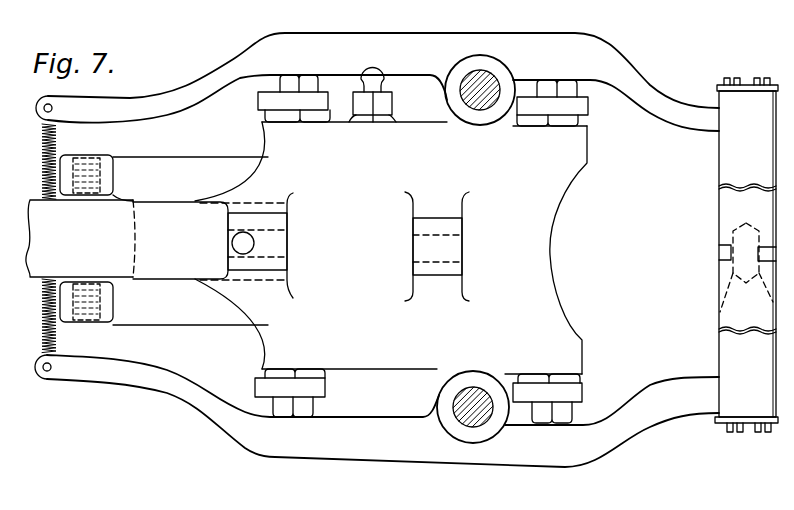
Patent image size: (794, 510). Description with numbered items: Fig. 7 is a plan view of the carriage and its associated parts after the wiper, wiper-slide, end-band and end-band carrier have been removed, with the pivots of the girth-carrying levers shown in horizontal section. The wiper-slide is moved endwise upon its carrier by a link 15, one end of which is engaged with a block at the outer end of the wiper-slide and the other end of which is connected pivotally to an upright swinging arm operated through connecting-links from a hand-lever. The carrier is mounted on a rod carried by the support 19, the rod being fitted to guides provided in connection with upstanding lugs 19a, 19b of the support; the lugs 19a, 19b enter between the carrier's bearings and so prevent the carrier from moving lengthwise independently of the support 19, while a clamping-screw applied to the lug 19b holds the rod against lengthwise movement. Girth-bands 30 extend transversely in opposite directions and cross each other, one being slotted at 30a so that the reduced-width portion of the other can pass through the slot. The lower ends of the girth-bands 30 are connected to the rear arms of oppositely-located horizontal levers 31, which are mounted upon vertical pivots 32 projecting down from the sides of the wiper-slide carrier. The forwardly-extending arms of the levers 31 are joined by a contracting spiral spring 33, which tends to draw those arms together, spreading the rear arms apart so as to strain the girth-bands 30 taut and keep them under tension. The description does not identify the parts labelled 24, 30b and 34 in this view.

The link 15 is at (187, 167).
The support 19 is at (543, 211).
The upstanding lug 19a is at (430, 217).
The upstanding lug 19b is at (263, 213).
The knob stud 24 is at (362, 68).
The girth-band 30 is at (720, 156).
The slot 30a is at (737, 277).
The slot 30b is at (740, 257).
The horizontal lever 31 is at (400, 40).
The vertical pivot 32 is at (490, 82).
The contracting spiral spring 33 is at (43, 143).
The clamp nut 34 is at (258, 103).